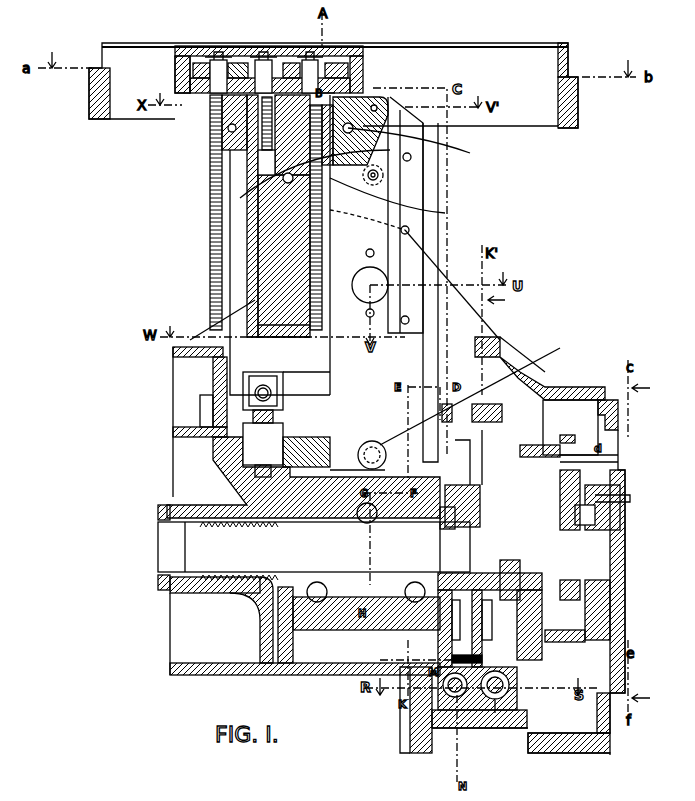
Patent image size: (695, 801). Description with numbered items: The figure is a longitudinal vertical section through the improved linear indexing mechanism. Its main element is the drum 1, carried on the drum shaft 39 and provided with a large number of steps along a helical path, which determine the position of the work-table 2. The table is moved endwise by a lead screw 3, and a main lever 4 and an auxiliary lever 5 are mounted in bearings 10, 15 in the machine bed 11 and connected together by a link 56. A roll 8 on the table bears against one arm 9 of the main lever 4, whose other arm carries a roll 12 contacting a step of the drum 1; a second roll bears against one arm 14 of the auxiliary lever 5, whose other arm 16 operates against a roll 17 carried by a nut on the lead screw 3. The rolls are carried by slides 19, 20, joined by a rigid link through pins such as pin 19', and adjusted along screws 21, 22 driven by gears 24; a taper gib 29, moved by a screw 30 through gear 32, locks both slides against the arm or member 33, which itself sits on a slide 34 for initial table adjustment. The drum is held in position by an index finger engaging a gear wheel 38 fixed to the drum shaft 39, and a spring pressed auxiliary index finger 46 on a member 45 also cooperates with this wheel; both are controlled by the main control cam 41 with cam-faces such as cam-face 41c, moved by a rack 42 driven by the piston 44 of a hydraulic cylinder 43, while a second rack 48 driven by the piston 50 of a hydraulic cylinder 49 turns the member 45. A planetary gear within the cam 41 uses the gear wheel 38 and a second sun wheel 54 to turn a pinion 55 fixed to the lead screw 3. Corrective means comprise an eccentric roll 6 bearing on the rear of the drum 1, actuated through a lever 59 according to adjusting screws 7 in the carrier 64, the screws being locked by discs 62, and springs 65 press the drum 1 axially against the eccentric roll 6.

The drum 1 is at (320, 438).
The work-table 2 is at (578, 105).
The lead screw 3 is at (415, 440).
The main lever 4 is at (440, 253).
The auxiliary lever 5 is at (200, 335).
The eccentric roll 6 is at (263, 443).
The adjusting screws 7 is at (528, 457).
The roll 8 is at (380, 97).
The arm of main lever 9 is at (395, 100).
The bearing 10 is at (362, 295).
The machine bed 11 is at (522, 375).
The roll 12 is at (372, 441).
The arm of auxiliary lever 14 is at (250, 165).
The bearing 15 is at (207, 419).
The arm of auxiliary lever 16 is at (315, 376).
The roll 17 is at (258, 385).
The slide 19 is at (342, 173).
The pin 19' is at (422, 148).
The slide 20 is at (232, 150).
The screw 21 is at (320, 268).
The screw 22 is at (210, 252).
The gears 24 is at (188, 72).
The taper gib 29 is at (244, 275).
The screw 30 is at (265, 175).
The gear 32 is at (250, 58).
The member 33 is at (285, 337).
The slide 34 is at (176, 80).
The gear wheel 38 is at (460, 639).
The drum shaft 39 is at (314, 547).
The main control element or cam 41 is at (440, 520).
The cam-face 41c is at (570, 427).
The rack 42 is at (455, 660).
The hydraulic cylinder 43 is at (452, 710).
The piston 44 is at (412, 710).
The member 45 is at (500, 652).
The auxiliary index finger 46 is at (435, 420).
The second rack 48 is at (505, 690).
The hydraulic cylinder 49 is at (490, 700).
The piston 50 is at (471, 767).
The sun wheel 54 is at (372, 462).
The pinion 55 is at (478, 405).
The link 56 is at (430, 213).
The lever 59 is at (225, 412).
The discs 62 is at (600, 465).
The adjusting screw carrier 64 is at (610, 515).
The springs 65 is at (225, 595).